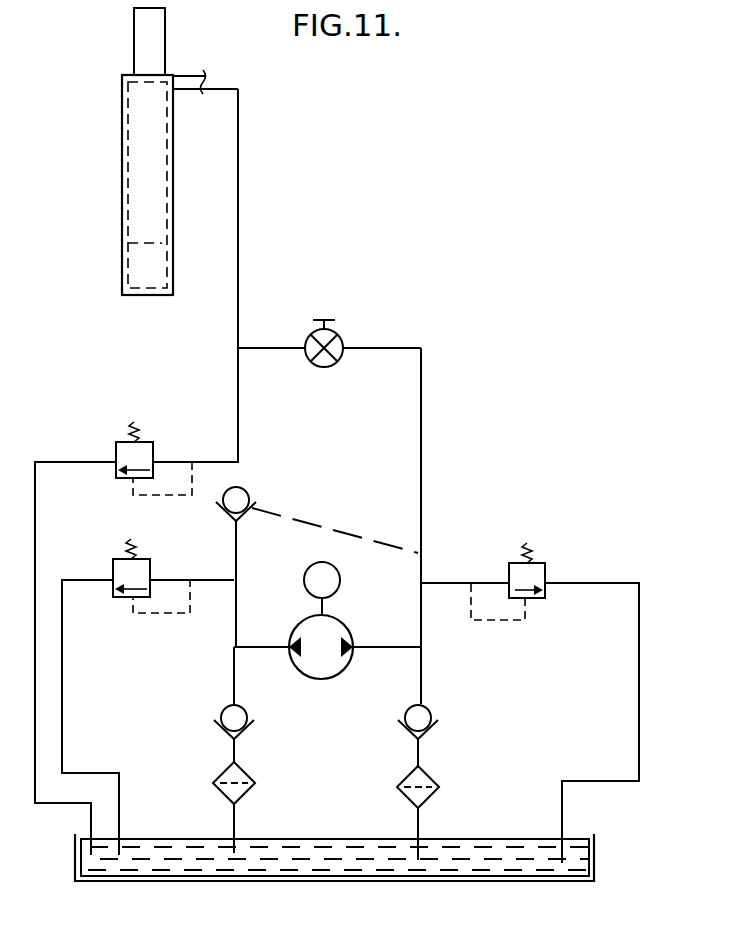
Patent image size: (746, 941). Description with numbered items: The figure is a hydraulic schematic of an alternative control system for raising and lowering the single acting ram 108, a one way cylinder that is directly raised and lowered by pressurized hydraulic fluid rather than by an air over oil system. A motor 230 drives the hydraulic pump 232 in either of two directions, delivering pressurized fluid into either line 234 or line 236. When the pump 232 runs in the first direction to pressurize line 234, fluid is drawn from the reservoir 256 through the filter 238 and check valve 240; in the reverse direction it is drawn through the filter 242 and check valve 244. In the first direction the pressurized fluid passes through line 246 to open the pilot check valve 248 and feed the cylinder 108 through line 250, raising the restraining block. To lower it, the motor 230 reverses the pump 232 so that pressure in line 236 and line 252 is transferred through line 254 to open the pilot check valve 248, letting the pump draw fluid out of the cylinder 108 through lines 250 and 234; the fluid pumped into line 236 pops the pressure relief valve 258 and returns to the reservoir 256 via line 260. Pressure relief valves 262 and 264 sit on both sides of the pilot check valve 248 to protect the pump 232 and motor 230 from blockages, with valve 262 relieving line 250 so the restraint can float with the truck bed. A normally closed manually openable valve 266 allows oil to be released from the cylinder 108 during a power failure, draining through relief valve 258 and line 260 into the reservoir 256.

The ram 108 is at (186, 133).
The line 250 is at (240, 282).
The manually openable valve 266 is at (347, 336).
The line 252 is at (422, 535).
The pressure relief valve 262 is at (142, 442).
The pressure relief valve 264 is at (142, 559).
The pilot check valve 248 is at (247, 492).
The line 254 is at (316, 522).
The line 246 is at (240, 548).
The pressure relief valve 258 is at (558, 565).
The line 260 is at (639, 660).
The motor 230 is at (341, 576).
The hydraulic pump 232 is at (321, 690).
The line 234 is at (258, 646).
The line 236 is at (383, 646).
The check valve 244 is at (221, 707).
The filter 242 is at (213, 783).
The check valve 240 is at (430, 707).
The filter 238 is at (439, 787).
The reservoir 256 is at (462, 838).